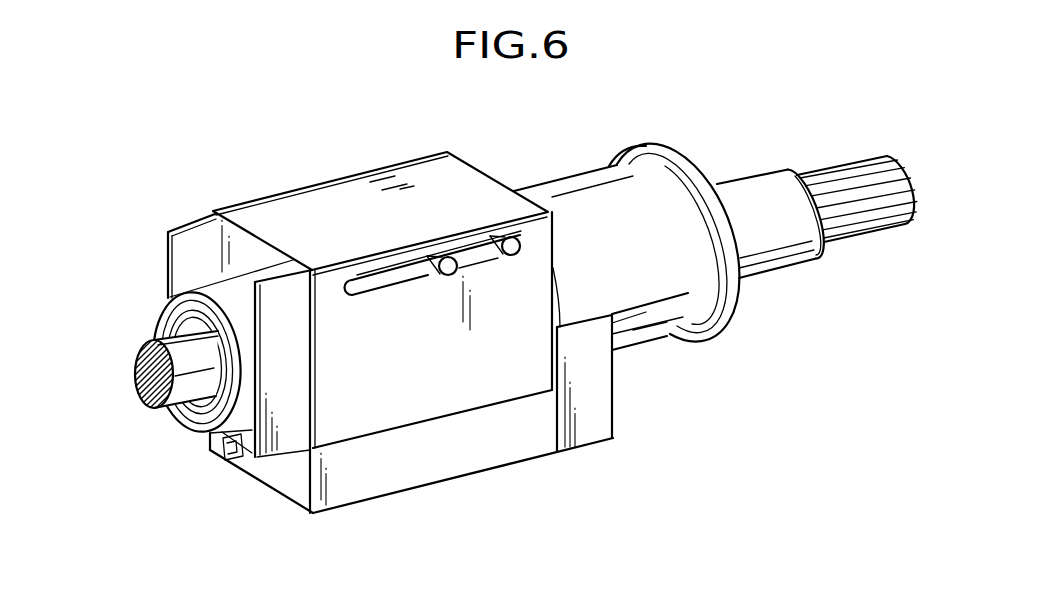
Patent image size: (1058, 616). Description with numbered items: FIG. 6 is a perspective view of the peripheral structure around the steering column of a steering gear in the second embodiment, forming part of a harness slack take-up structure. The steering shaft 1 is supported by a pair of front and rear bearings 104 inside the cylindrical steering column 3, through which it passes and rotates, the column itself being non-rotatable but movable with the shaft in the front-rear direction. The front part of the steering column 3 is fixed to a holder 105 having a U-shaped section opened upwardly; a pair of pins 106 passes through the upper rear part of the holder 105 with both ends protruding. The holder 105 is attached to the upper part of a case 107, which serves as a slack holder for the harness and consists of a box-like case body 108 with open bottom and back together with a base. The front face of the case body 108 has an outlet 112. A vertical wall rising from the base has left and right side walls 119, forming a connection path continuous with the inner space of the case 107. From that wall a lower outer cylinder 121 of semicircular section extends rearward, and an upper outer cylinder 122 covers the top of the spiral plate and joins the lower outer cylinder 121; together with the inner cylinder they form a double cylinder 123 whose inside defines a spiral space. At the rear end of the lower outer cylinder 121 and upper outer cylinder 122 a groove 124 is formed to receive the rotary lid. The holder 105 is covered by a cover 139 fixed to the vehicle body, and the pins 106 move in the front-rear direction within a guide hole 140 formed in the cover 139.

The steering shaft 1 is at (868, 233).
The steering column 3 is at (770, 176).
The bearings 104 is at (158, 314).
The holder 105 is at (183, 253).
The pins 106 is at (500, 240).
The case 107 is at (413, 498).
The case body 108 is at (453, 464).
The outlet 112 is at (213, 450).
The side walls 119 is at (584, 424).
The lower outer cylinder 121 is at (648, 331).
The upper outer cylinder 122 is at (570, 190).
The double cylinder 123 is at (688, 253).
The groove 124 is at (679, 143).
The cover 139 is at (289, 202).
The guide hole 140 is at (363, 282).